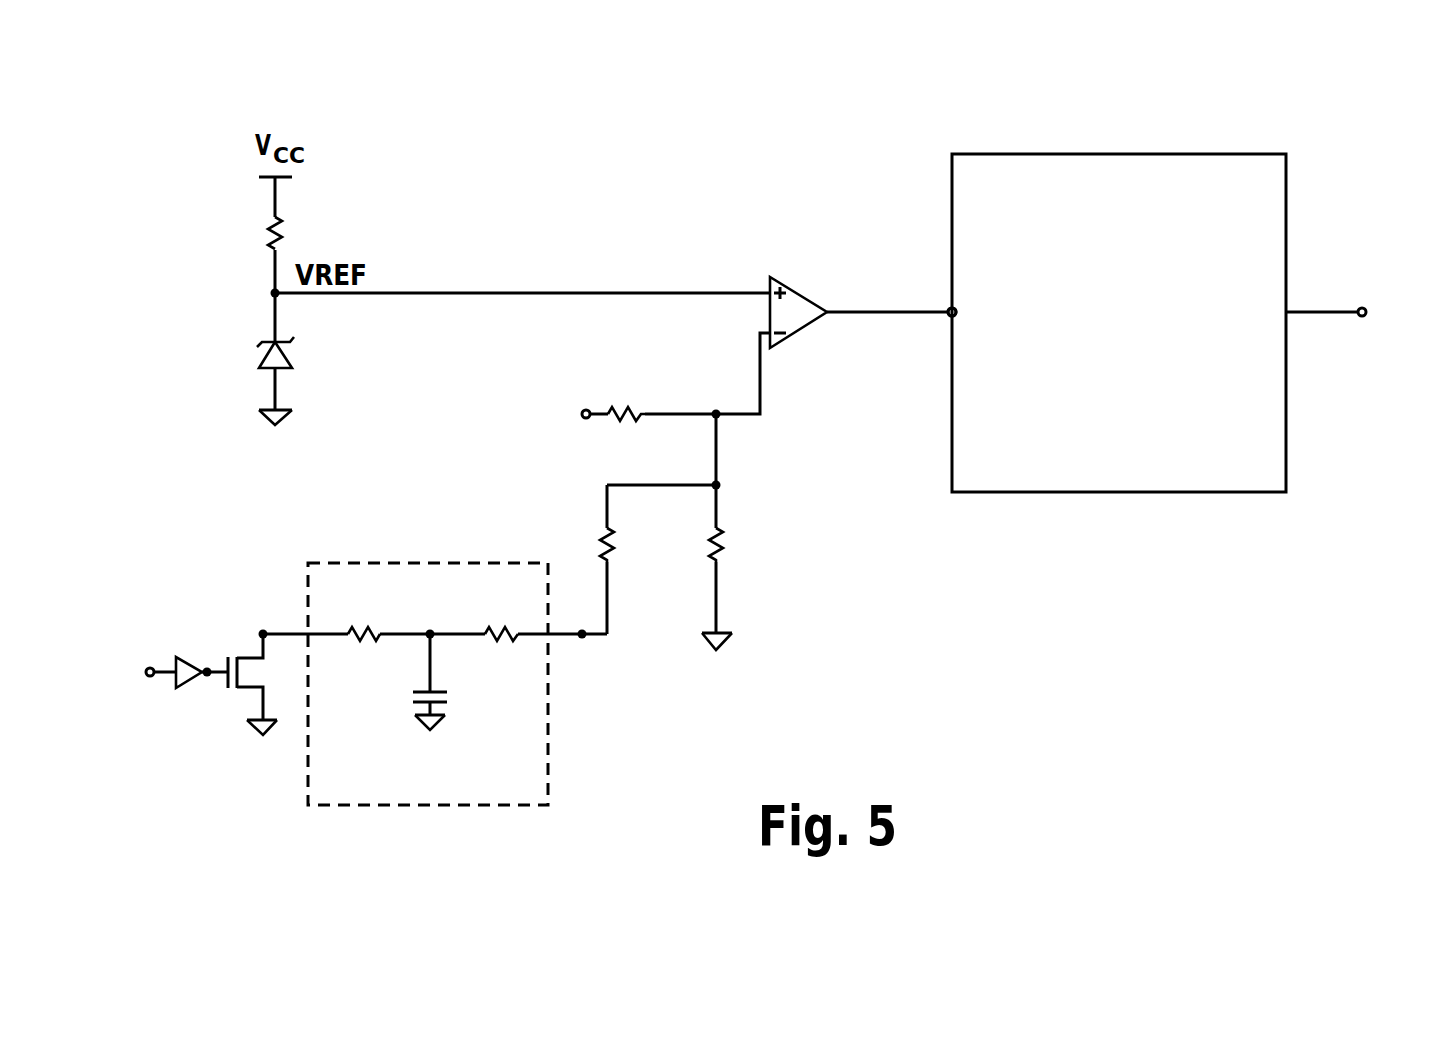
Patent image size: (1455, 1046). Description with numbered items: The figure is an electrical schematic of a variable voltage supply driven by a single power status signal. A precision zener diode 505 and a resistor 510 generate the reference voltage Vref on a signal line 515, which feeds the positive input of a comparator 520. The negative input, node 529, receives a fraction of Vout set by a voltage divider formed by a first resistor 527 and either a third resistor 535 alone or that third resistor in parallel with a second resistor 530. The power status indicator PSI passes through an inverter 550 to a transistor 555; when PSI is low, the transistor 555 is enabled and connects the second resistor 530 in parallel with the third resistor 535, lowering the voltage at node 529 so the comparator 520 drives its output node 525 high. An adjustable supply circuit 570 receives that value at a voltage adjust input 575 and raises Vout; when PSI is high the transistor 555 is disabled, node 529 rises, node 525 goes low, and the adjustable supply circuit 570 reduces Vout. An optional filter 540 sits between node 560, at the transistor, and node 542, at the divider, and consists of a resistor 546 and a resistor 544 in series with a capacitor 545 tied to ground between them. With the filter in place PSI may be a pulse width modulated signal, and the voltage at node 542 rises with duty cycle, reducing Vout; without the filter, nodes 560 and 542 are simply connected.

The zener diode 505 is at (328, 353).
The resistor 510 is at (320, 211).
The signal line 515 is at (425, 276).
The comparator 520 is at (805, 298).
The node 525 is at (903, 293).
The resistor 527 is at (615, 418).
The node 529 is at (716, 410).
The resistor 530 is at (609, 556).
The resistor 535 is at (763, 521).
The optional filter 540 is at (548, 782).
The node 542 is at (582, 640).
The resistor 544 is at (497, 630).
The capacitor 545 is at (476, 692).
The resistor 546 is at (362, 630).
The inverter 550 is at (187, 687).
The transistor 555 is at (261, 684).
The node 560 is at (263, 632).
The adjustable supply circuit 570 is at (1258, 469).
The voltage adjust input 575 is at (956, 315).